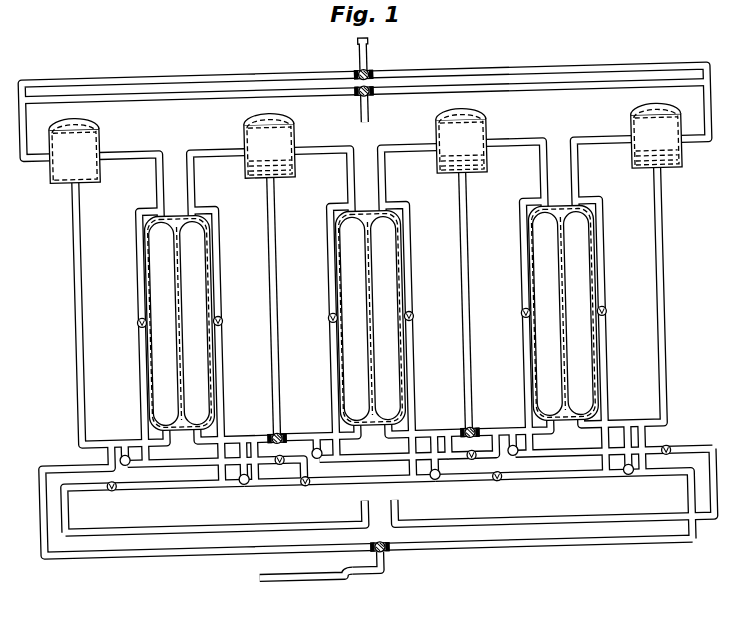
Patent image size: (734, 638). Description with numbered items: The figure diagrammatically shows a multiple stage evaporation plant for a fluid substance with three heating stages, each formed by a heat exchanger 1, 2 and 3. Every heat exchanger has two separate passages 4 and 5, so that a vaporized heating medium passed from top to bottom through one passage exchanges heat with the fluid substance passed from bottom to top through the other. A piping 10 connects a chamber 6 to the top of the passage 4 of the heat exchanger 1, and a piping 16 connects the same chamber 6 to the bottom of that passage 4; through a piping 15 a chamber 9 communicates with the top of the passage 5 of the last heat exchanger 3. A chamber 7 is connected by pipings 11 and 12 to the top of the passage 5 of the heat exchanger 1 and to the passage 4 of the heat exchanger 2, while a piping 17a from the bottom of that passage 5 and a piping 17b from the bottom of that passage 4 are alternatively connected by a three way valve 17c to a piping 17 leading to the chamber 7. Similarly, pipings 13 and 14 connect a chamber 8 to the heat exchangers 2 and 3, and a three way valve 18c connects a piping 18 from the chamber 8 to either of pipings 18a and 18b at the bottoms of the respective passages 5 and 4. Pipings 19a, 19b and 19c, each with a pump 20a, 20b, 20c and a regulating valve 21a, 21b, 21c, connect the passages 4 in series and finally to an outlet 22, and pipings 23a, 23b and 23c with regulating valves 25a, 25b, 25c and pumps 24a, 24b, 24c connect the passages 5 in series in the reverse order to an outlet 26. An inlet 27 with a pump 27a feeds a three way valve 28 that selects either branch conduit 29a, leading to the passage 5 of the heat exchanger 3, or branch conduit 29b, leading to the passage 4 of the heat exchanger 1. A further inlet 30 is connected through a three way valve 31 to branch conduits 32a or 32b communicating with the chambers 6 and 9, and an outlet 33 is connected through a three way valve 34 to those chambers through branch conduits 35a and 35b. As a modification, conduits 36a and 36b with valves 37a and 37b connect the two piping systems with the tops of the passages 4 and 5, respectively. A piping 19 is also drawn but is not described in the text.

The heat exchanger 1 is at (212, 298).
The heat exchanger 2 is at (403, 300).
The heat exchanger 3 is at (596, 300).
The passage 4 is at (355, 319).
The passage 5 is at (384, 318).
The chamber 6 is at (101, 126).
The chamber 7 is at (298, 128).
The chamber 8 is at (490, 128).
The chamber 9 is at (686, 125).
The piping 10 is at (142, 145).
The piping 11 is at (208, 146).
The piping 12 is at (350, 146).
The piping 13 is at (410, 146).
The piping 14 is at (546, 143).
The piping 15 is at (585, 143).
The piping 16 is at (84, 230).
The piping 17 is at (279, 302).
The piping 18 is at (471, 300).
The outlet pipe 19 is at (666, 300).
The piping 17a is at (224, 434).
The piping 17b is at (305, 434).
The three way valve 17c is at (276, 428).
The piping 18a is at (431, 434).
The piping 18b is at (498, 435).
The three way valve 18c is at (481, 424).
The piping 19a is at (164, 442).
The piping 19b is at (364, 440).
The piping 19c is at (560, 443).
The pump 20a is at (125, 459).
The pump 20b is at (318, 458).
The pump 20c is at (514, 460).
The regulating valve 21a is at (280, 462).
The regulating valve 21b is at (457, 462).
The regulating valve 21c is at (667, 454).
The outlet 22 is at (393, 503).
The piping 23a is at (544, 492).
The piping 23b is at (342, 490).
The piping 23c is at (178, 484).
The pump 24a is at (623, 481).
The pump 24b is at (431, 481).
The pump 24c is at (238, 481).
The regulating valve 25a is at (494, 485).
The regulating valve 25b is at (299, 484).
The regulating valve 25c is at (111, 484).
The outlet 26 is at (215, 517).
The inlet 27 is at (378, 564).
The pump 27a is at (338, 571).
The three way valve 28 is at (378, 541).
The branch conduit 29a is at (490, 555).
The branch conduit 29b is at (250, 547).
The inlet 30 is at (374, 58).
The three way valve 31 is at (378, 72).
The branch conduit 32a is at (164, 76).
The branch conduit 32b is at (515, 75).
The outlet 33 is at (374, 118).
The three way valve 34 is at (376, 96).
The branch conduit 35a is at (540, 97).
The branch conduit 35b is at (166, 96).
The conduit 36a is at (138, 340).
The conduit 36b is at (222, 341).
The valve 37a is at (137, 318).
The valve 37b is at (223, 318).